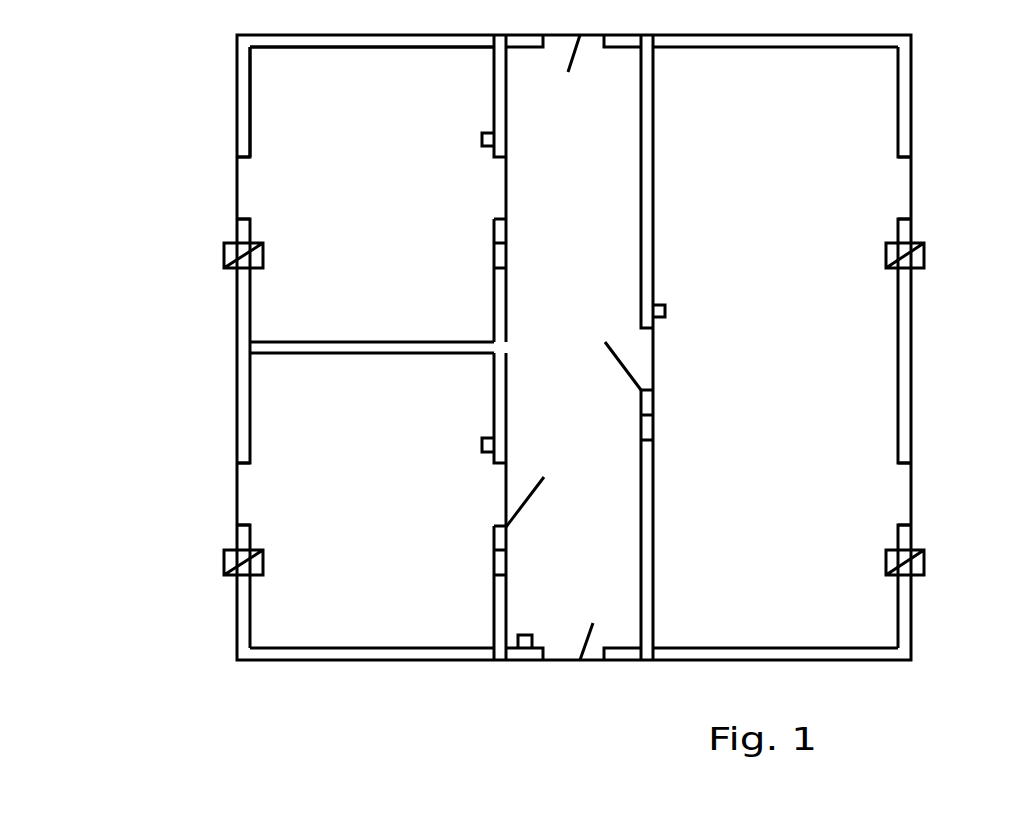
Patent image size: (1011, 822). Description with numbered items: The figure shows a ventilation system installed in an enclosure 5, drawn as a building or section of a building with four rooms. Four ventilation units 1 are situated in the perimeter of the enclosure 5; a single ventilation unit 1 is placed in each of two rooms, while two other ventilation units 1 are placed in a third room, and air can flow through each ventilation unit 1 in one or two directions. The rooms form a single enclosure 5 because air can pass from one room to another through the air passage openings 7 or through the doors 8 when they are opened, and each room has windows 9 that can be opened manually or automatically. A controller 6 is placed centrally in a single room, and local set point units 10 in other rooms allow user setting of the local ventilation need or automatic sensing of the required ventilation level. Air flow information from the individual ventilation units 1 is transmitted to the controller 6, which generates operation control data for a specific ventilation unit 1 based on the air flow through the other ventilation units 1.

The ventilation unit 1 is at (960, 549).
The enclosure 5 is at (334, 157).
The controller 6 is at (532, 635).
The air passage opening 7 is at (690, 440).
The door 8 is at (557, 525).
The window 9 is at (950, 477).
The local set point unit 10 is at (702, 292).